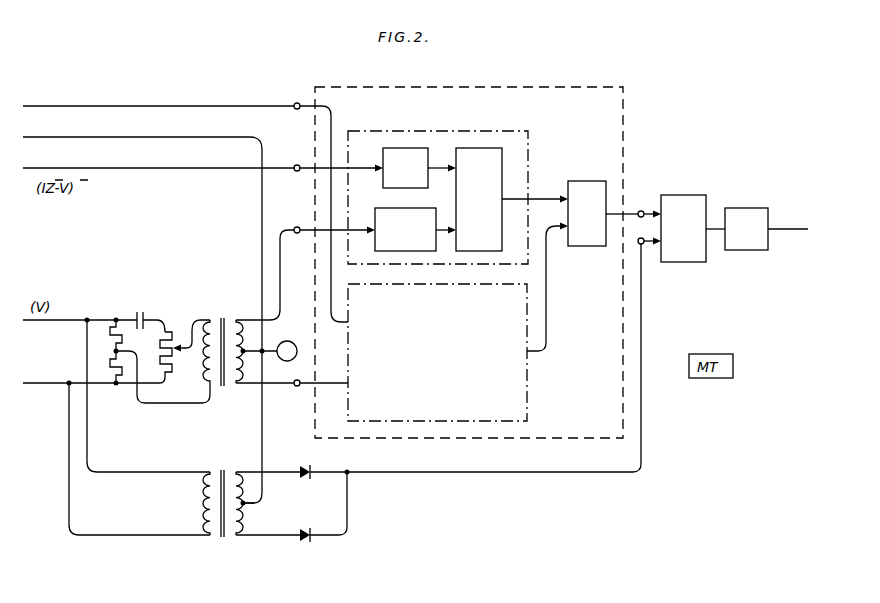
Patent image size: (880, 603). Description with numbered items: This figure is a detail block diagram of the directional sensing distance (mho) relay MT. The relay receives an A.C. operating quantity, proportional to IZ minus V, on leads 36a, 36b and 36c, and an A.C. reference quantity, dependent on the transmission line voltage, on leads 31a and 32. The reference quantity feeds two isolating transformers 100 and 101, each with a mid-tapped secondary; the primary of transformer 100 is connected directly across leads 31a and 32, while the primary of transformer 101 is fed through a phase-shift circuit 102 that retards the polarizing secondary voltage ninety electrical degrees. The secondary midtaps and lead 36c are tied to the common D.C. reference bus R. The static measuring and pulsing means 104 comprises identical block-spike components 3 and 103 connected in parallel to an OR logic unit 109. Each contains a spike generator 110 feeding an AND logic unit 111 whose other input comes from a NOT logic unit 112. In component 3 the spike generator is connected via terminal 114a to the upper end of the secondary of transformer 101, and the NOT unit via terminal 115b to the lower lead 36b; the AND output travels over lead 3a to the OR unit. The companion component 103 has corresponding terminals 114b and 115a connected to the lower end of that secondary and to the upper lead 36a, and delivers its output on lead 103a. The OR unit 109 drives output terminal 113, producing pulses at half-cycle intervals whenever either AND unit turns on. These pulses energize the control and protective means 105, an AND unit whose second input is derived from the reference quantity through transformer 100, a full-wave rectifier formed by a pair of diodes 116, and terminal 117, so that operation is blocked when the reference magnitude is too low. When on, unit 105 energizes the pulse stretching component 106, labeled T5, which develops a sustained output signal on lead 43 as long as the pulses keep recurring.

The upper lead 36a is at (68, 105).
The lead 36c is at (68, 136).
The lower lead 36b is at (68, 167).
The terminal 115a is at (296, 103).
The terminal 115b is at (296, 165).
The terminal 114a is at (296, 227).
The terminal 114b is at (296, 386).
The static circuit means 104 is at (590, 86).
The block-spike component 3 is at (528, 131).
The NOT logic unit 112 is at (390, 147).
The AND logic unit 111 is at (478, 147).
The spike generator 110 is at (378, 207).
The lead 3a is at (533, 198).
The OR logic unit 109 is at (590, 181).
The block-spike component 103 is at (528, 396).
The lead 103a is at (547, 329).
The output terminal 113 is at (640, 211).
The terminal 117 is at (639, 245).
The control and protective means 105 is at (686, 194).
The pulse stretching component 106 is at (749, 207).
The lead 43 is at (793, 230).
The lead 31a is at (40, 322).
The lead 32 is at (40, 385).
The phase-shift circuit 102 is at (156, 305).
The isolating transformer 101 is at (239, 307).
The isolating transformer 100 is at (239, 465).
The diodes 116 is at (318, 511).